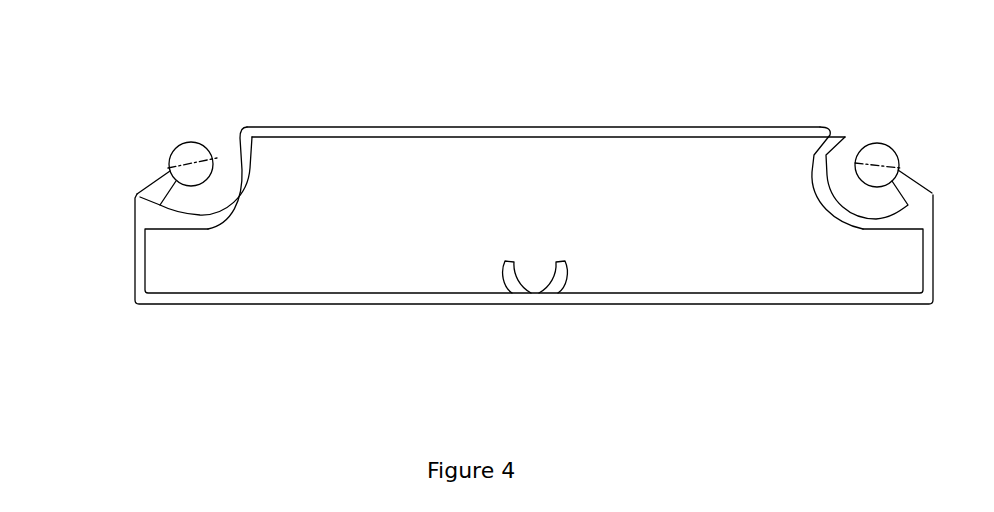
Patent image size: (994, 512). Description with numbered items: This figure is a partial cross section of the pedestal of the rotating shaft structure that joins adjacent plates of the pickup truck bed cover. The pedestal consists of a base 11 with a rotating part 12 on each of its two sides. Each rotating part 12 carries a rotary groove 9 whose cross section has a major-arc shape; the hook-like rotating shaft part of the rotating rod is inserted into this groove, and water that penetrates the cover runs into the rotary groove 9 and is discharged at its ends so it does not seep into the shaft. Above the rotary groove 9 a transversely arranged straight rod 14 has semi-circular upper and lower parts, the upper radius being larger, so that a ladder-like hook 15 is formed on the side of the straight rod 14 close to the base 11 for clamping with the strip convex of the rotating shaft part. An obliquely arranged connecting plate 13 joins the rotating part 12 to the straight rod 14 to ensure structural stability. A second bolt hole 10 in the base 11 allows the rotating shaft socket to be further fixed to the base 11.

The rotary groove 9 is at (837, 178).
The second bolt hole 10 is at (536, 287).
The base 11 is at (350, 300).
The rotating part 12 is at (865, 225).
The connecting plate 13 is at (158, 190).
The straight rod 14 is at (190, 157).
The ladder-like hook 15 is at (214, 158).